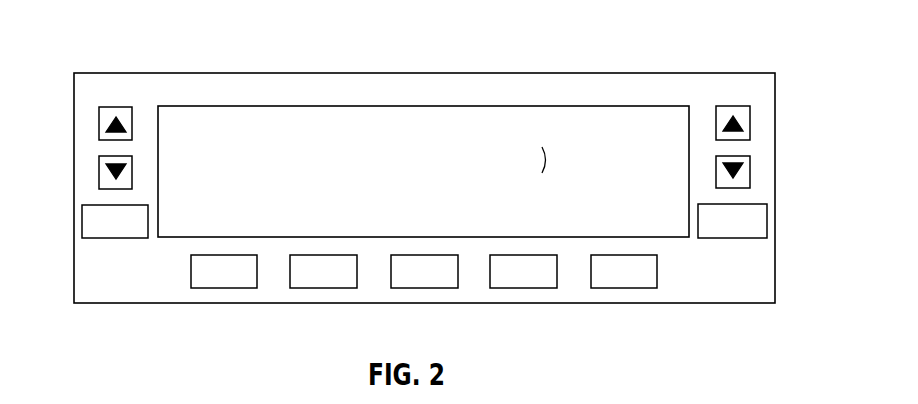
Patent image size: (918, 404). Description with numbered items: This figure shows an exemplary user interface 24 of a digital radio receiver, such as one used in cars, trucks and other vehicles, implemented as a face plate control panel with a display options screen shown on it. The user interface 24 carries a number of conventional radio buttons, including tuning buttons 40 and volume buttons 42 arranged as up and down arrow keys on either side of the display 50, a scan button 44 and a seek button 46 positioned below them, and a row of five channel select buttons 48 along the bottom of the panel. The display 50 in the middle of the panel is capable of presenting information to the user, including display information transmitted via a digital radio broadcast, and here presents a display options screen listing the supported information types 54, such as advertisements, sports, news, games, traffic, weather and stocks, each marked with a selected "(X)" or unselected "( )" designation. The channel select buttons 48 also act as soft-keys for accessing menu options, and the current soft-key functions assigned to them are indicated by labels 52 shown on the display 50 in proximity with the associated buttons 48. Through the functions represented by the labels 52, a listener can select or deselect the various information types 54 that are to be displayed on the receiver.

The user interface 24 is at (100, 72).
The display 50 is at (543, 103).
The tuning buttons 40 is at (99, 124).
The volume buttons 42 is at (750, 128).
The scan button 44 is at (82, 222).
The seek button 46 is at (767, 220).
The channel select buttons 48 is at (300, 288).
The labels 52 is at (307, 210).
The information types 54 is at (186, 138).